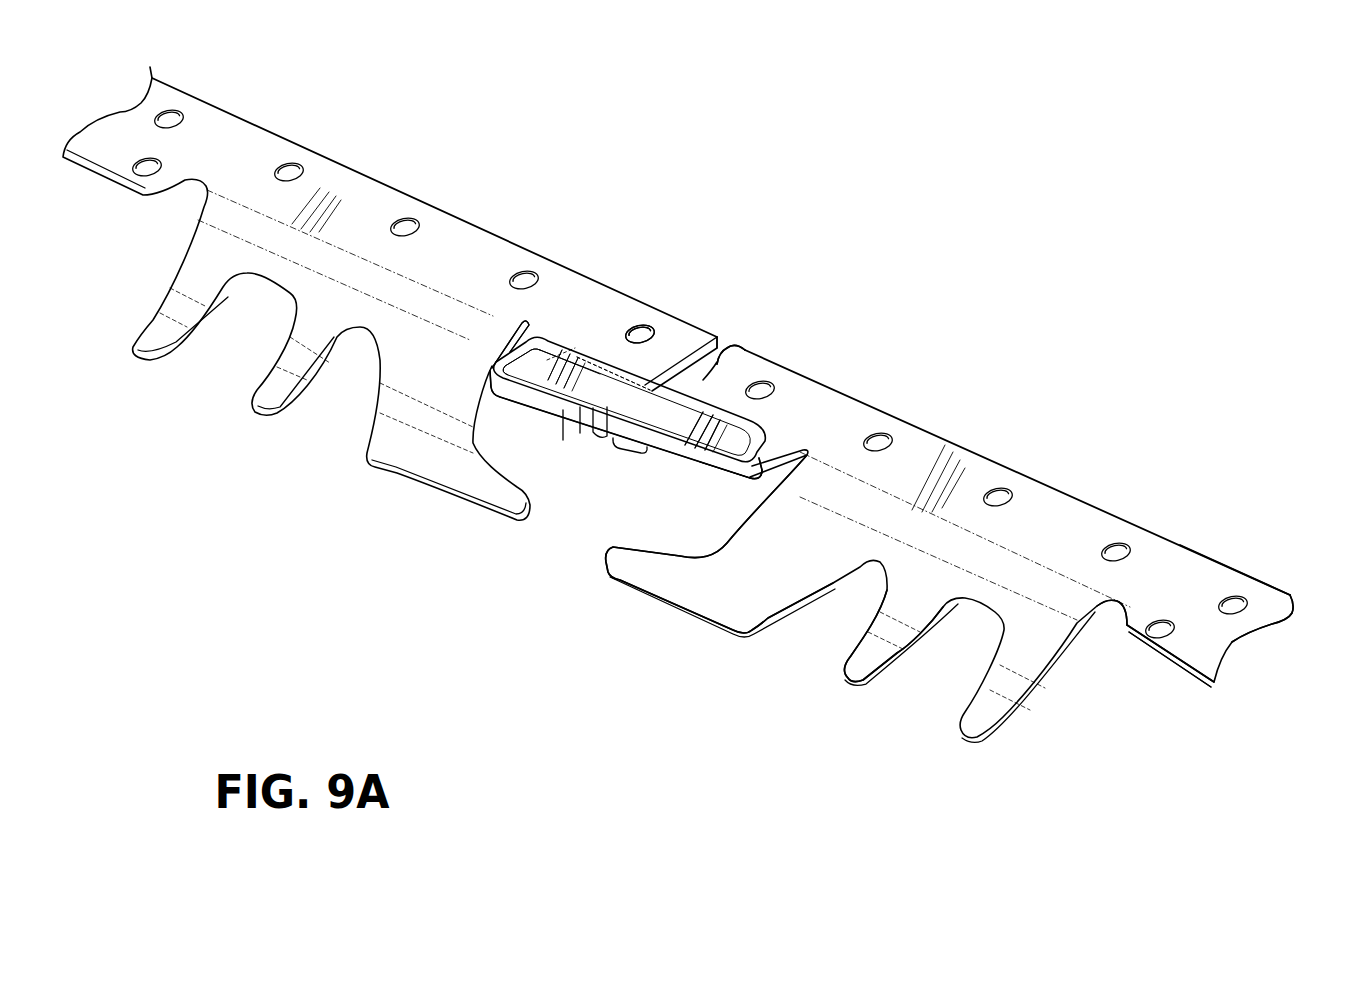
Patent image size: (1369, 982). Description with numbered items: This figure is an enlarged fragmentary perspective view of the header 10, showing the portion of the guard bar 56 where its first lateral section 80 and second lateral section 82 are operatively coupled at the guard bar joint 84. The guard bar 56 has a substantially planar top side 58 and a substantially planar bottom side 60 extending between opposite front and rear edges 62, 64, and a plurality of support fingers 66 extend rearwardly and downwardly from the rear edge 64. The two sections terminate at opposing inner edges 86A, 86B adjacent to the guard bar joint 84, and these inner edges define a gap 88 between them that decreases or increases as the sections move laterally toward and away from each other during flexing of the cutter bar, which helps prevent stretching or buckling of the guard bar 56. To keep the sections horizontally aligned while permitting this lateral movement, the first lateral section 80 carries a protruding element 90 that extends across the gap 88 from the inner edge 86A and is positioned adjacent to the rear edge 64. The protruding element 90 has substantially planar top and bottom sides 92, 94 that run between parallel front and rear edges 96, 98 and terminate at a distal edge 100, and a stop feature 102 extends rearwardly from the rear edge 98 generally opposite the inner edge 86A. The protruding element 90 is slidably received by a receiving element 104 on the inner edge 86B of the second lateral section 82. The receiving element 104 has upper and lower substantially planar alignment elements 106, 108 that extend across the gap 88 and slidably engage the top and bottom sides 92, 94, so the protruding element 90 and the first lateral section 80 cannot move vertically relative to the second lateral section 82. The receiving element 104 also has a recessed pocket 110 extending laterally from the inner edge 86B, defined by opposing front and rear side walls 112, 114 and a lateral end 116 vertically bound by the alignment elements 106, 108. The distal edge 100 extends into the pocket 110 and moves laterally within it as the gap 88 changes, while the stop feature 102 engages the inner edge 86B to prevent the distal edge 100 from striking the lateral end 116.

The clip assembly 10 is at (929, 207).
The guard bar 56 is at (1113, 680).
The top side 58 is at (1263, 617).
The bottom side 60 is at (1213, 684).
The front edge 62 is at (1181, 668).
The rear edge 64 is at (1240, 573).
The support fingers 66 is at (851, 685).
The first lateral section 80 is at (932, 362).
The second lateral section 82 is at (408, 112).
The guard bar joint 84 is at (515, 548).
The inner edge 86A is at (718, 365).
The inner edge 86B is at (697, 352).
The gap 88 is at (733, 338).
The protruding element 90 is at (712, 488).
The top side 92 is at (593, 418).
The bottom side 94 is at (563, 412).
The front edge 96 is at (600, 410).
The rear edge 98 is at (580, 410).
The distal edge 100 is at (548, 361).
The stop feature 102 is at (627, 452).
The receiving element 104 is at (744, 473).
The upper alignment element 106 is at (750, 433).
The lower alignment element 108 is at (670, 468).
The recessed pocket 110 is at (508, 360).
The front side wall 112 is at (645, 375).
The rear side wall 114 is at (543, 418).
The lateral end 116 is at (520, 332).